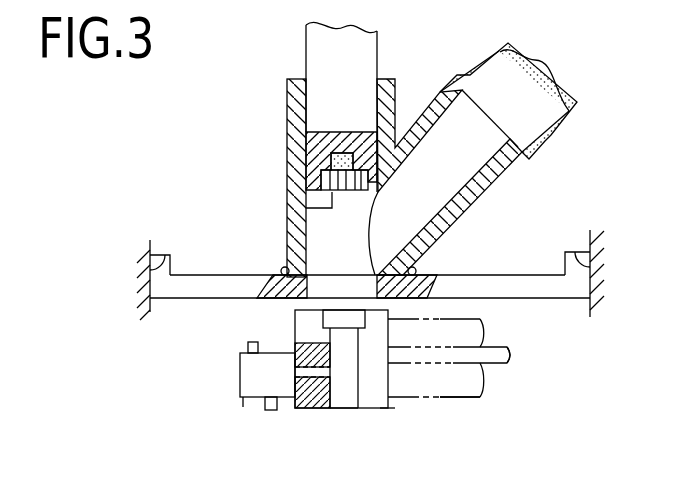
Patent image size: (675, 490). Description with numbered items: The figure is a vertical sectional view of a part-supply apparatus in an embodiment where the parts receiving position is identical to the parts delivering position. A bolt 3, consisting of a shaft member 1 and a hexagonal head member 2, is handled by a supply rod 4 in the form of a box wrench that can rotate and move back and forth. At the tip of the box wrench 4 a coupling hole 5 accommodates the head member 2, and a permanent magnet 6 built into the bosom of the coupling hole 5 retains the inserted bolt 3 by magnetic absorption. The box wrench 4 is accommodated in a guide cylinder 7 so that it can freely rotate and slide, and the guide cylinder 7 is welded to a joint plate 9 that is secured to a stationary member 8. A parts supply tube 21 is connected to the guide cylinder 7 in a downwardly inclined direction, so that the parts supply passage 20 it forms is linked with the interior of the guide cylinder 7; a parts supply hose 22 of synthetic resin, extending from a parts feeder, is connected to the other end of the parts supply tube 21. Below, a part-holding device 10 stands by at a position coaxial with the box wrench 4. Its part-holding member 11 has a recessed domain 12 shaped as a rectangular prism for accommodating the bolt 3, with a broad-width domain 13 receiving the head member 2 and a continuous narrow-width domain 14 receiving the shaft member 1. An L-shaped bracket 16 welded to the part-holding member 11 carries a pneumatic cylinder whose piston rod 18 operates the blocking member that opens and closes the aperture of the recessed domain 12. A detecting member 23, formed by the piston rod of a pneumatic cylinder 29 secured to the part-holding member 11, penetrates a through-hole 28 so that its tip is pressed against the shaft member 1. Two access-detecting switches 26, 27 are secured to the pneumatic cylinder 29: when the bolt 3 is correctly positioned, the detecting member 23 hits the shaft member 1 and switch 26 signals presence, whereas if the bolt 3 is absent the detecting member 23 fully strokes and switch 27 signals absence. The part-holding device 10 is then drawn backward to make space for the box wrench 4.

The shaft member 1 is at (370, 408).
The head member 2 is at (347, 322).
The bolt 3 is at (343, 412).
The supply rod 4 is at (378, 34).
The coupling hole 5 is at (306, 208).
The permanent magnet 6 is at (350, 135).
The guide cylinder 7 is at (287, 107).
The stationary member 8 is at (165, 255).
The joint plate 9 is at (537, 274).
The part-holding device 10 is at (397, 410).
The part-holding member 11 is at (392, 378).
The recessed domain 12 is at (392, 340).
The broad-width domain 13 is at (313, 318).
The narrow-width domain 14 is at (337, 406).
The L-shaped bracket 16 is at (470, 400).
The piston rod 18 is at (493, 367).
The parts supply passage 20 is at (456, 188).
The parts supply tube 21 is at (455, 226).
The parts supply hose 22 is at (565, 117).
The detecting member 23 is at (293, 378).
The access-detecting switch 26 is at (247, 342).
The access-detecting switch 27 is at (270, 410).
The through-hole 28 is at (303, 410).
The pneumatic cylinder 29 is at (243, 407).